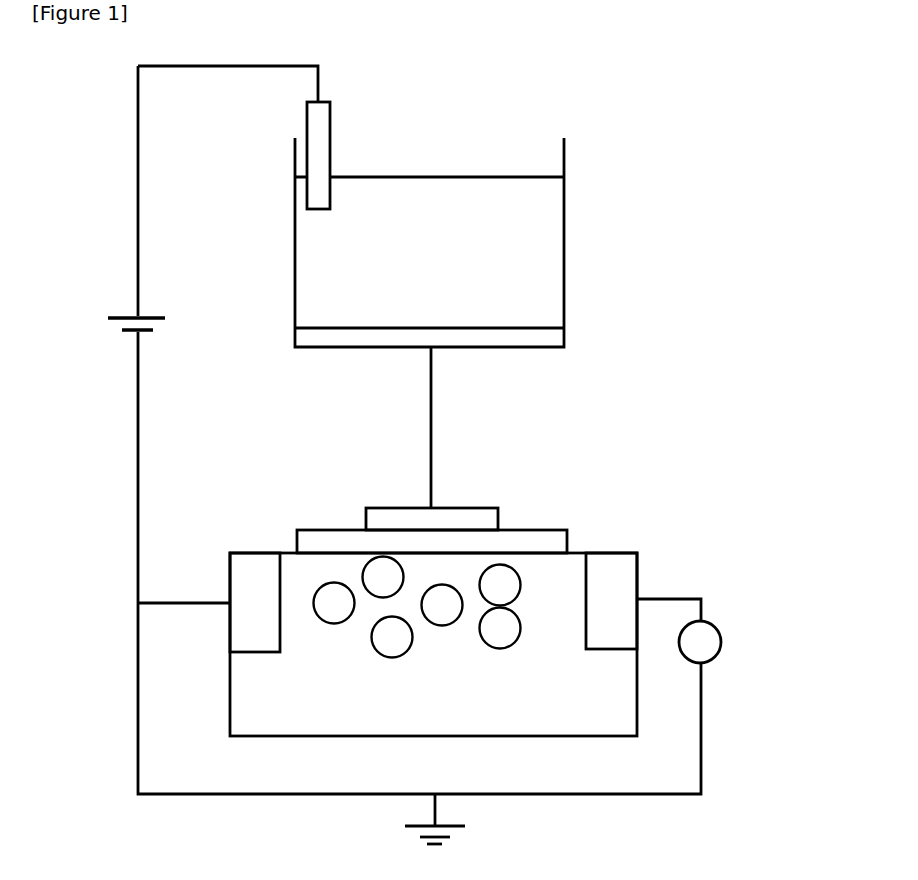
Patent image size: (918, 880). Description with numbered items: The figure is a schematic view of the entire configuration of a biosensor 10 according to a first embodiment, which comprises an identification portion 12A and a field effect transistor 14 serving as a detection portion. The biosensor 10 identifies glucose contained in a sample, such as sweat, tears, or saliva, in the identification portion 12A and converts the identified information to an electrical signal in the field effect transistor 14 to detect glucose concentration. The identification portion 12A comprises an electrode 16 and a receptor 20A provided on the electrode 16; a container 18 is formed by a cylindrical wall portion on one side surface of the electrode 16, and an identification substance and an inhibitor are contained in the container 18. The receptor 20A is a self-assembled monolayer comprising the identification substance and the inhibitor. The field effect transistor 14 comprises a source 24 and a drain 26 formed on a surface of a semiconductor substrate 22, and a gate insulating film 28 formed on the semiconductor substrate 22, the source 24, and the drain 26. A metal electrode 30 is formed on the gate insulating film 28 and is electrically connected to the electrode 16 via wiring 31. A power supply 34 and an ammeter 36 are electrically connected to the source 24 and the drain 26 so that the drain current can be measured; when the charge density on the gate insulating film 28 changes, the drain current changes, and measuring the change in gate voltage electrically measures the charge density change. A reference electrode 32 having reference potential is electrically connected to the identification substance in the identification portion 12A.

The biosensor 10 is at (712, 205).
The identification portion 12A is at (582, 222).
The field effect transistor 14 is at (635, 492).
The electrode 16 is at (552, 325).
The container 18 is at (564, 262).
The receptor 20A is at (540, 283).
The semiconductor substrate 22 is at (565, 736).
The source 24 is at (252, 553).
The drain 26 is at (612, 550).
The gate insulating film 28 is at (538, 528).
The metal electrode 30 is at (475, 508).
The wiring 31 is at (431, 408).
The reference electrode 32 is at (330, 149).
The power supply 34 is at (102, 327).
The ammeter 36 is at (720, 645).